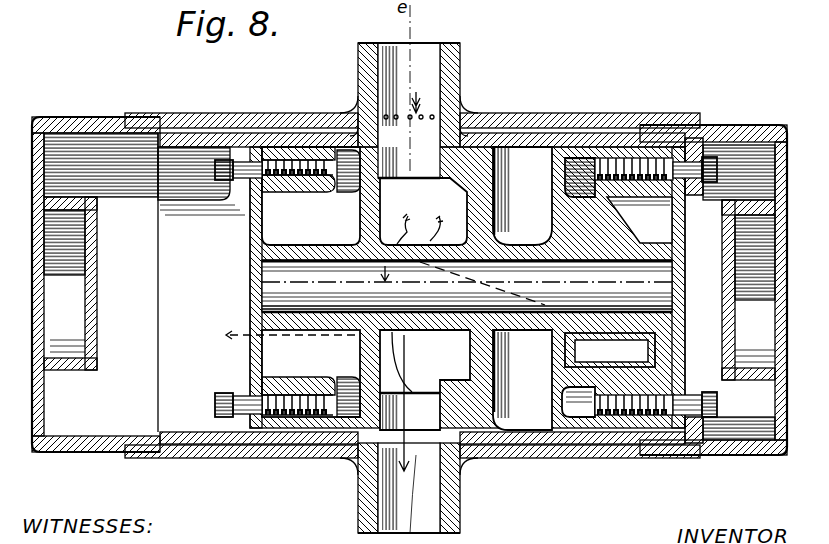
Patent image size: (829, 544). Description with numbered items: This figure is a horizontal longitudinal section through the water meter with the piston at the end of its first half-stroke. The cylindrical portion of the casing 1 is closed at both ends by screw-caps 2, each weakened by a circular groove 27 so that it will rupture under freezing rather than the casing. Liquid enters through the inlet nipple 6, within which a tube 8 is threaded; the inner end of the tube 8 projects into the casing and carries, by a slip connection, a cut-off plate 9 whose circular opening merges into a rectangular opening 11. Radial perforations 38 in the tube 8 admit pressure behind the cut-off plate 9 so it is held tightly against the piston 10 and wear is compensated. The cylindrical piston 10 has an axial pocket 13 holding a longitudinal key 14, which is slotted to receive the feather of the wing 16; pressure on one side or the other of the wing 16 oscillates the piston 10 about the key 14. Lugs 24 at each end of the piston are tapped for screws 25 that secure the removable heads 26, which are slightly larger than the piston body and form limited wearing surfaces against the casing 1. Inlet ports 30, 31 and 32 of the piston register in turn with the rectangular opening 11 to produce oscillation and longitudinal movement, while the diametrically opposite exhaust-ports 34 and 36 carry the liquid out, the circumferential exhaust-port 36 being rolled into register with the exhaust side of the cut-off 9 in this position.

The cylindrical portion of the casing 1 is at (561, 124).
The screw-caps 2 is at (409, 273).
The inlet nipple 6 is at (425, 297).
The tubes 8 is at (442, 62).
The cut-off plates 9 is at (328, 138).
The piston 10 is at (278, 197).
The rectangular opening 11 is at (468, 112).
The axial cylindrical pocket 13 is at (655, 265).
The cylindrical longitudinal key 14 is at (60, 237).
The wing 16 is at (250, 291).
The lugs 24 is at (282, 160).
The screws 25 is at (230, 186).
The removable heads of the piston 26 is at (250, 262).
The circular groove 27 is at (33, 172).
The port of the piston 30 is at (574, 259).
The port of the piston 31 is at (263, 158).
The port of the piston 32 is at (430, 163).
The exhaust-port 34 is at (522, 380).
The circumferential exhaust-port 36 is at (425, 400).
The radial perforations 38 is at (409, 94).